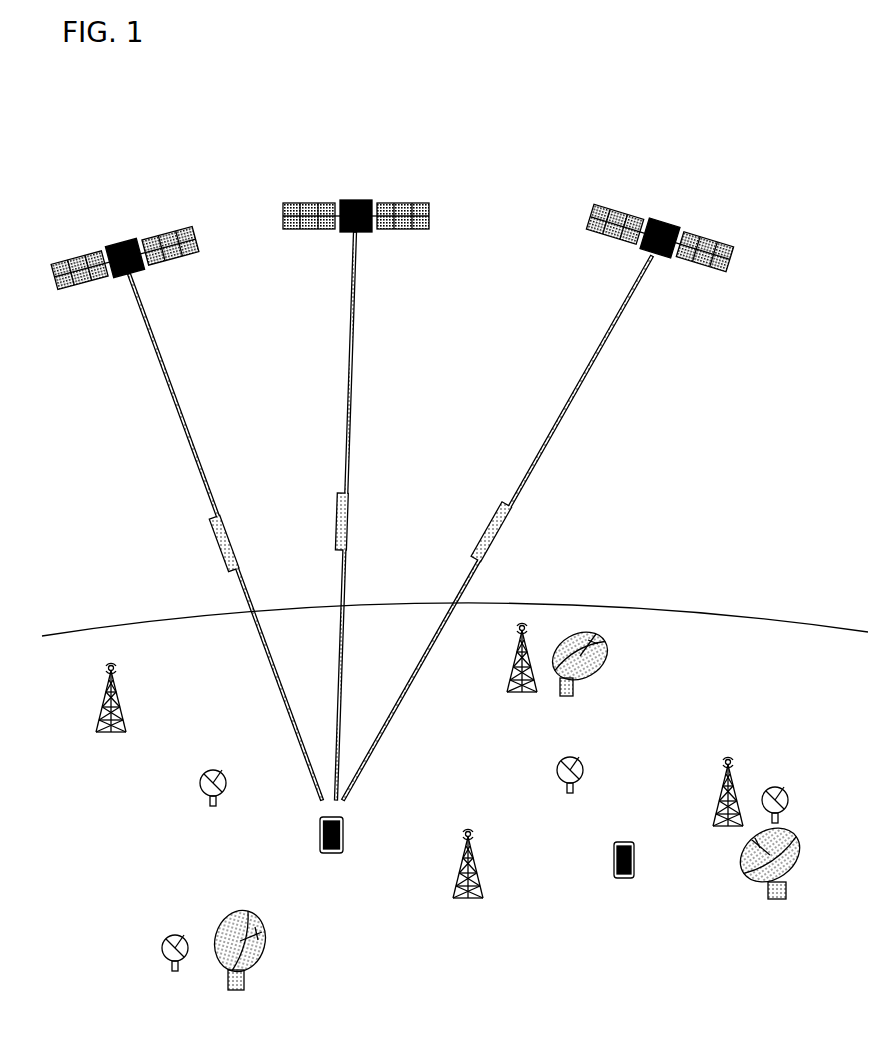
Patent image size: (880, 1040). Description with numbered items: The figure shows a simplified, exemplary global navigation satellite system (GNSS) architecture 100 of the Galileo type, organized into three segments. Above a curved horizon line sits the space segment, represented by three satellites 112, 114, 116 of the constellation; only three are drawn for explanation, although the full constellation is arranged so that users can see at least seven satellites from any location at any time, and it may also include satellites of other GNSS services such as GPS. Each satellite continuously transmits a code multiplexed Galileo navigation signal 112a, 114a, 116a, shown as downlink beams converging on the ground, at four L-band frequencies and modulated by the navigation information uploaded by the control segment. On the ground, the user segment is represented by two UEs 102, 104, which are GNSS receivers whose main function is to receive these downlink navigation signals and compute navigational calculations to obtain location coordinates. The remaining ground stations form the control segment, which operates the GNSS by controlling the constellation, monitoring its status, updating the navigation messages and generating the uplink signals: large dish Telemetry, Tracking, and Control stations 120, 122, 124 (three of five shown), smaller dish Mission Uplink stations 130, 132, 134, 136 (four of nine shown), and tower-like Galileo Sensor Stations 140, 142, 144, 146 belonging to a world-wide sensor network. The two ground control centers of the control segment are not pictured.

The GNSS architecture 100 is at (455, 351).
The UE 102 is at (330, 846).
The UE 104 is at (625, 870).
The satellite 112 is at (124, 257).
The satellite 114 is at (356, 204).
The satellite 116 is at (660, 237).
The Galileo navigation signal 112a is at (226, 537).
The Galileo navigation signal 114a is at (323, 516).
The Galileo navigation signal 116a is at (498, 527).
The Telemetry, Tracking, and Control station 120 is at (578, 697).
The Telemetry, Tracking, and Control station 122 is at (243, 908).
The Telemetry, Tracking, and Control station 124 is at (798, 884).
The Mission Uplink station 130 is at (198, 788).
The Mission Uplink station 132 is at (560, 759).
The Mission Uplink station 134 is at (170, 985).
The Mission Uplink station 136 is at (788, 793).
The Galileo Sensor Station 140 is at (516, 702).
The Galileo Sensor Station 142 is at (112, 708).
The Galileo Sensor Station 144 is at (471, 879).
The Galileo Sensor Station 146 is at (742, 790).